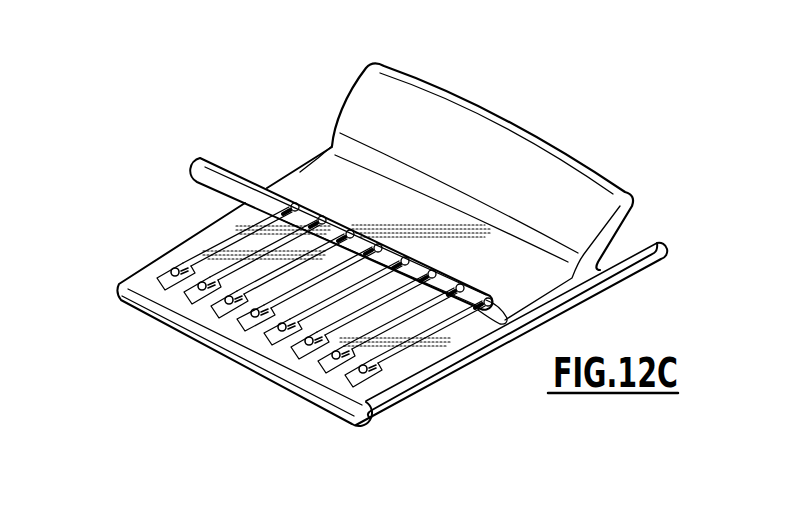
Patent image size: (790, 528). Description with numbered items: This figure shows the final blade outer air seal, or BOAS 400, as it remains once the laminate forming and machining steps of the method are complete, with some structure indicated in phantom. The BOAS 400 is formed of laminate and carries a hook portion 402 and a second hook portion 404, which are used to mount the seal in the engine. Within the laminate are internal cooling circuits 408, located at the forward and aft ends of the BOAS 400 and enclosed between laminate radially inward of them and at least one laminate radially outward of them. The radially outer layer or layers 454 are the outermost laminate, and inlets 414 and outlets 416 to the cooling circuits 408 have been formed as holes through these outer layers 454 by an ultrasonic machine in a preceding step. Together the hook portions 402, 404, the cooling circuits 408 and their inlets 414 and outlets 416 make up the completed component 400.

The BOAS 400 is at (457, 381).
The hook portion 402 is at (195, 170).
The hook portion 404 is at (522, 160).
The internal cooling circuits 408 is at (242, 240).
The inlets 414 is at (295, 203).
The outlets 416 is at (172, 270).
The radially outer layer or layers 454 is at (338, 188).